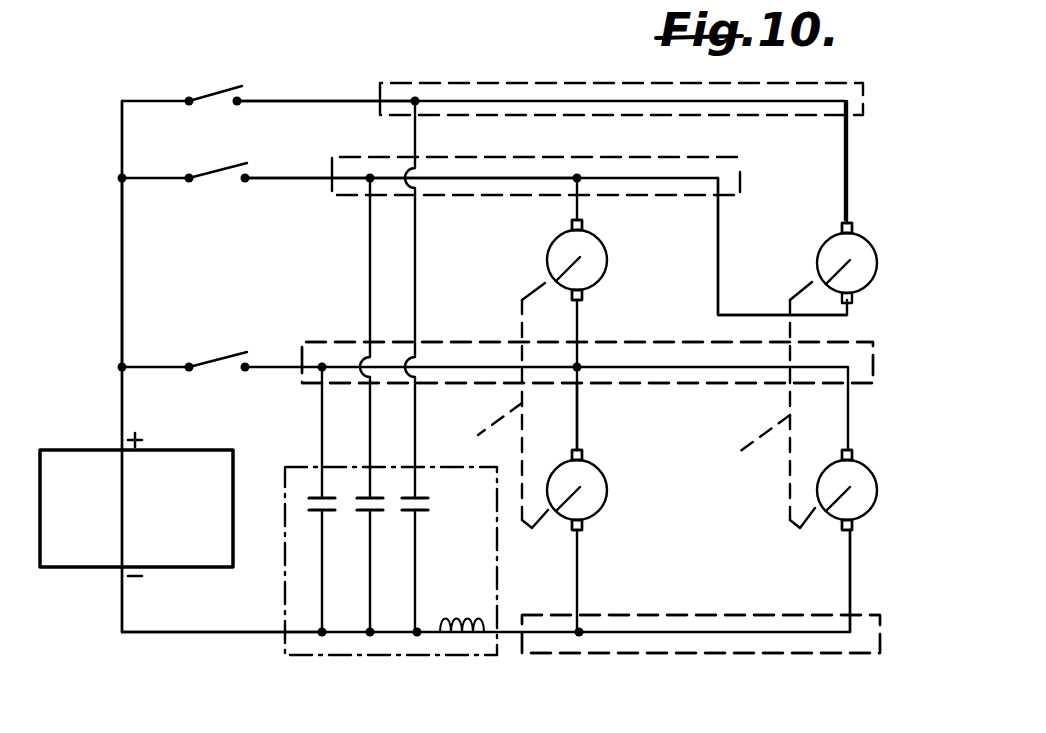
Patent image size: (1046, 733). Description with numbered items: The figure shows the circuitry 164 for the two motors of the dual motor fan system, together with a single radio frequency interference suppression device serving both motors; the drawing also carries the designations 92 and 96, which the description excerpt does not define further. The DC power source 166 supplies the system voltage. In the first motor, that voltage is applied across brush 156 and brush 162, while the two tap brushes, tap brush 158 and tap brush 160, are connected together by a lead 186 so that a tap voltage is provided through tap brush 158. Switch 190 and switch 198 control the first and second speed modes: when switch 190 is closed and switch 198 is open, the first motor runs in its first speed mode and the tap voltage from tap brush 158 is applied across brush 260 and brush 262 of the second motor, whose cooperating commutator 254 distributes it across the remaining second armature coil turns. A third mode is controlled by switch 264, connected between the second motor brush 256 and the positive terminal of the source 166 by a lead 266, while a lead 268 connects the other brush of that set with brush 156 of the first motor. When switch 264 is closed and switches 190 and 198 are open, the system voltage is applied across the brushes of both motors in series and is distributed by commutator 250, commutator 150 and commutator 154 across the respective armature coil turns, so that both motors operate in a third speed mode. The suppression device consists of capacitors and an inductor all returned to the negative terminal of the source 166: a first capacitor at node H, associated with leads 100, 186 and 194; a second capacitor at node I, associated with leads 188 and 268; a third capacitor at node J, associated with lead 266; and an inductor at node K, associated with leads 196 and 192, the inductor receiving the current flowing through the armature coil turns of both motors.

The control circuit 92 is at (177, 14).
The drive assembly 96 is at (597, 7).
The lead 100 is at (494, 328).
The commutator 150 is at (592, 259).
The commutator 154 is at (606, 492).
The brush 156 is at (583, 228).
The tap brush 158 is at (583, 298).
The tap brush 160 is at (590, 456).
The brush 162 is at (589, 527).
The circuitry 164 is at (123, 86).
The DC power source 166 is at (193, 449).
The lead 186 is at (582, 409).
The lead 188 is at (468, 180).
The switch 190 is at (221, 180).
The lead 192 is at (172, 636).
The lead 194 is at (680, 384).
The lead 196 is at (849, 581).
The switch 198 is at (243, 340).
The commutator 250 is at (832, 256).
The commutator 254 is at (842, 522).
The brush 256 is at (842, 229).
The brush 260 is at (840, 458).
The brush 262 is at (843, 528).
The switch 264 is at (234, 64).
The lead 266 is at (312, 99).
The lead 268 is at (718, 266).